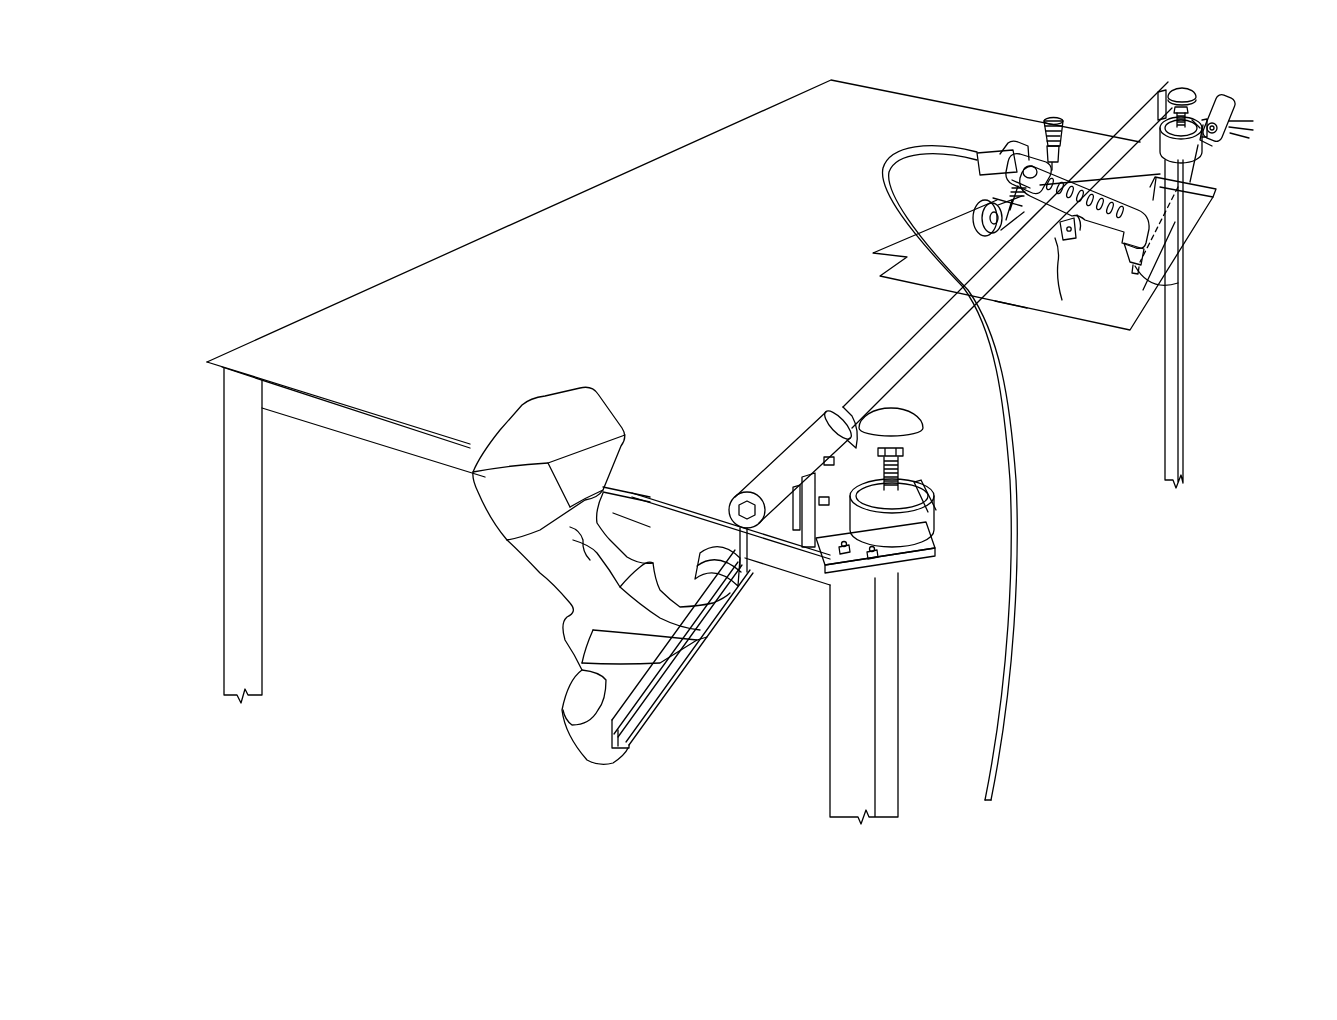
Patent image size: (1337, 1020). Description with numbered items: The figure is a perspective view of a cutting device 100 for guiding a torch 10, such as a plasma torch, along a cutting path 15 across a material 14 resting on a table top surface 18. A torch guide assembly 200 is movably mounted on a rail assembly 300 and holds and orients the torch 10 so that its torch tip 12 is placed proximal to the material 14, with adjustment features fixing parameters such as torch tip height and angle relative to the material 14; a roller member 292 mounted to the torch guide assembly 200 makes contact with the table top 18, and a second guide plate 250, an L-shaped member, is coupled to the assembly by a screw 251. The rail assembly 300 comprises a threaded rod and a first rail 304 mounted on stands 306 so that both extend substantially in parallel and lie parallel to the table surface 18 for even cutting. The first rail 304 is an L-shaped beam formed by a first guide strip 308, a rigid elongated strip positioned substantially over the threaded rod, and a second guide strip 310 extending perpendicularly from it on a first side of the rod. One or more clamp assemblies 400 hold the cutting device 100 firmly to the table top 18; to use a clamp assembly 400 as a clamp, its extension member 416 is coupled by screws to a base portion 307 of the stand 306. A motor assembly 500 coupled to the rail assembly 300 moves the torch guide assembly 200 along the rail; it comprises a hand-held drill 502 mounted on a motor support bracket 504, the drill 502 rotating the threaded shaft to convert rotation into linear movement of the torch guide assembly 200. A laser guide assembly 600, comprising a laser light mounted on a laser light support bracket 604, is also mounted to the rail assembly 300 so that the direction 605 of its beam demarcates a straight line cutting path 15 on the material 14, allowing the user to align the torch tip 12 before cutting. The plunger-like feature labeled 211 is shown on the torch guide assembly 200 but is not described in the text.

The cutting device 100 is at (519, 156).
The table top surface 18 is at (787, 320).
The material 14 is at (1134, 307).
The cutting path 15 is at (1173, 222).
The torch tip 12 is at (1170, 285).
The rail assembly 300 is at (956, 392).
The first rail 304 is at (927, 322).
The first guide strip 308 is at (897, 357).
The second guide strip 310 is at (1003, 292).
The stand 306 is at (1156, 98).
The base portion 307 is at (856, 590).
The extension member 416 is at (905, 560).
The clamp assembly 400 is at (1203, 79).
The laser guide assembly 600 is at (1250, 100).
The laser light support bracket 604 is at (1243, 128).
The direction of the beam of light 605 is at (1176, 200).
The torch guide assembly 200 is at (1055, 115).
The plunger 211 is at (1046, 134).
The torch 10 is at (1072, 173).
The roller member 292 is at (978, 202).
The second guide plate 250 is at (1066, 240).
The screw 251 is at (1080, 232).
The motor assembly 500 is at (682, 443).
The hand-held drill 502 is at (542, 595).
The motor support bracket 504 is at (768, 600).